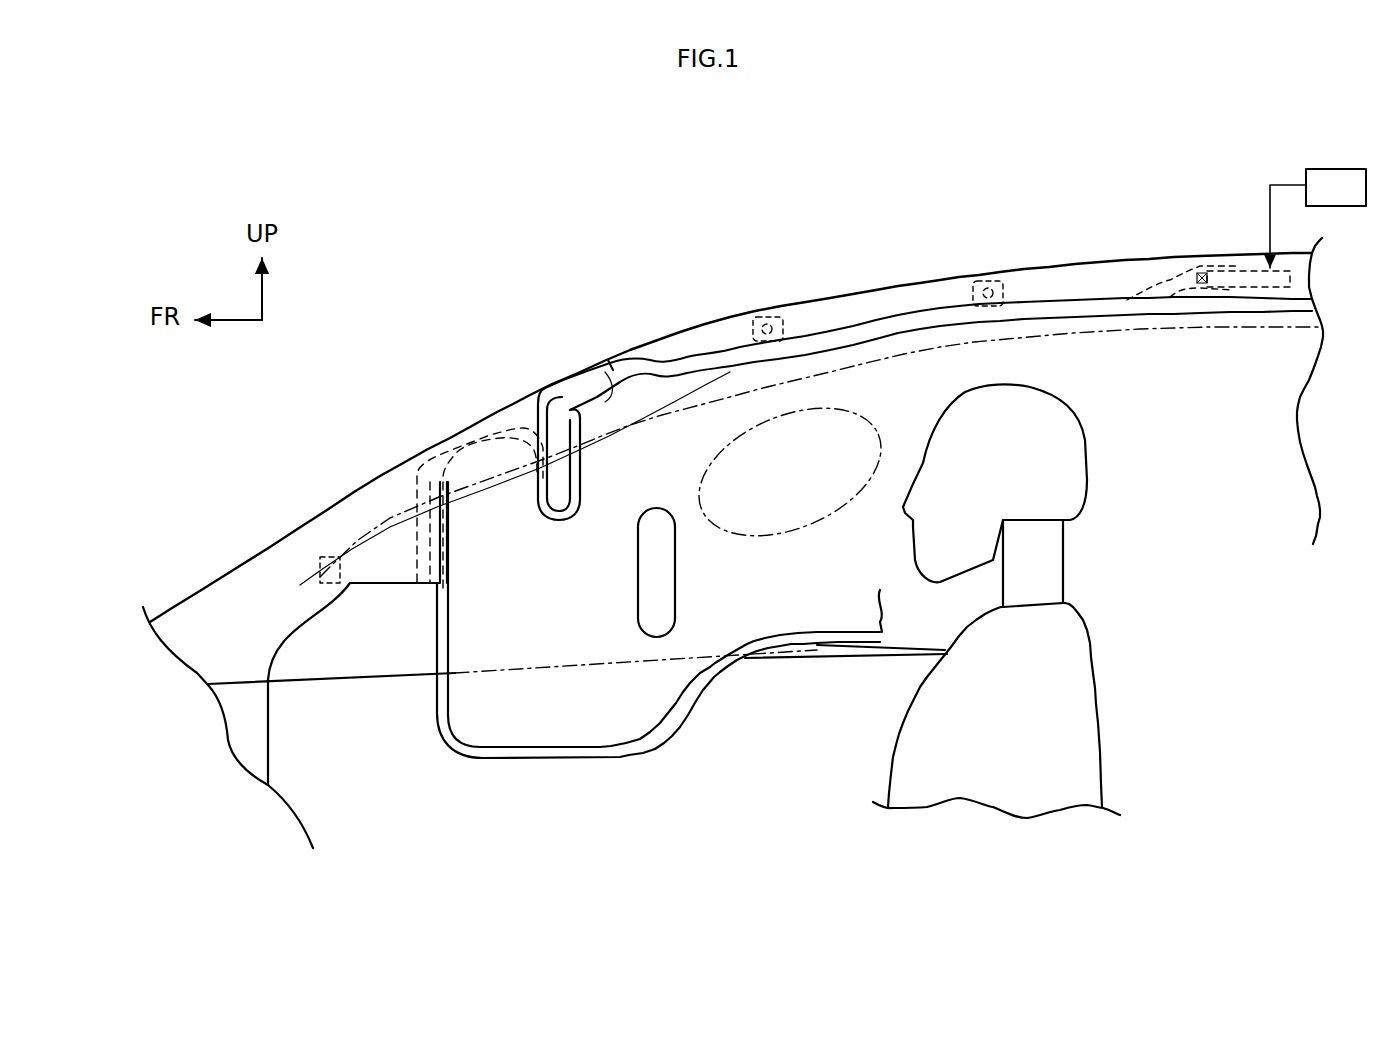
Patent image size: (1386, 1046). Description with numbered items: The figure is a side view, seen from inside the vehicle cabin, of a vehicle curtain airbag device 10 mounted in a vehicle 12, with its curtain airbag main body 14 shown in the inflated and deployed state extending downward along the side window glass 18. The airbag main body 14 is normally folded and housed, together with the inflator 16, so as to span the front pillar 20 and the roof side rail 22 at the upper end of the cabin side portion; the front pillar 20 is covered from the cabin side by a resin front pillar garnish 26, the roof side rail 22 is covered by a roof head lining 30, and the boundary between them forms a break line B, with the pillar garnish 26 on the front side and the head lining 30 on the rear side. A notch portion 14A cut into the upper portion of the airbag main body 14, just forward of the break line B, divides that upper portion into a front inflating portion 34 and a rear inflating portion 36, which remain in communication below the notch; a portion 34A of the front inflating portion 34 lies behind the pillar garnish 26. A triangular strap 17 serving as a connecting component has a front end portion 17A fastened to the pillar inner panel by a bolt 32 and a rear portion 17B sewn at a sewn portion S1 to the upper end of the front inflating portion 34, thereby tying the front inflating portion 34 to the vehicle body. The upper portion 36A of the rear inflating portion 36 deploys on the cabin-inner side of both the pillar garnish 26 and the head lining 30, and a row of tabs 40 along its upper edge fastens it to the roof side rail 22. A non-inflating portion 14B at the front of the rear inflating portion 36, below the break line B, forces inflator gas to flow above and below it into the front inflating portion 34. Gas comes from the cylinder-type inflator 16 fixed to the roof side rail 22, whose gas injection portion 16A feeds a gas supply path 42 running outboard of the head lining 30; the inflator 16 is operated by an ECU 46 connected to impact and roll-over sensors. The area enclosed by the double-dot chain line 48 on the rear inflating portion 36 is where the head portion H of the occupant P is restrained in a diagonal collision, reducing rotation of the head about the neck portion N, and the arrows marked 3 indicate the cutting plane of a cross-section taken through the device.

The vehicle curtain airbag device 10 is at (828, 258).
The vehicle 12 is at (167, 578).
The curtain airbag main body 14 is at (555, 775).
The notch portion 14A is at (547, 387).
The non-inflating portion 14B is at (665, 625).
The inflator 16 is at (1245, 269).
The gas injection portion 16A is at (1212, 270).
The triangular strap 17 is at (380, 590).
The front end portion 17A is at (320, 585).
The rear portion 17B is at (428, 590).
The side window glass 18 is at (783, 590).
The front pillar 20 is at (378, 463).
The roof side rail 22 is at (942, 275).
The front pillar garnish 26 is at (397, 480).
The roof head lining 30 is at (1057, 288).
The bolt 32 is at (327, 543).
The front inflating portion 34 is at (482, 765).
The airbag folded portion 34A is at (490, 470).
The rear inflating portion 36 is at (822, 647).
The upper portion of the rear inflating portion 36A is at (657, 403).
The tabs 40 is at (780, 318).
The gas supply path 42 is at (1167, 277).
The ECU 46 is at (1320, 168).
The double-dot chain line 48 is at (877, 392).
The section line 3- 3 is at (297, 580).
The break line B is at (640, 437).
The sewn portion S1 is at (432, 562).
The head portion H is at (1071, 451).
The neck portion N is at (1050, 564).
The vehicle occupant P is at (1103, 698).